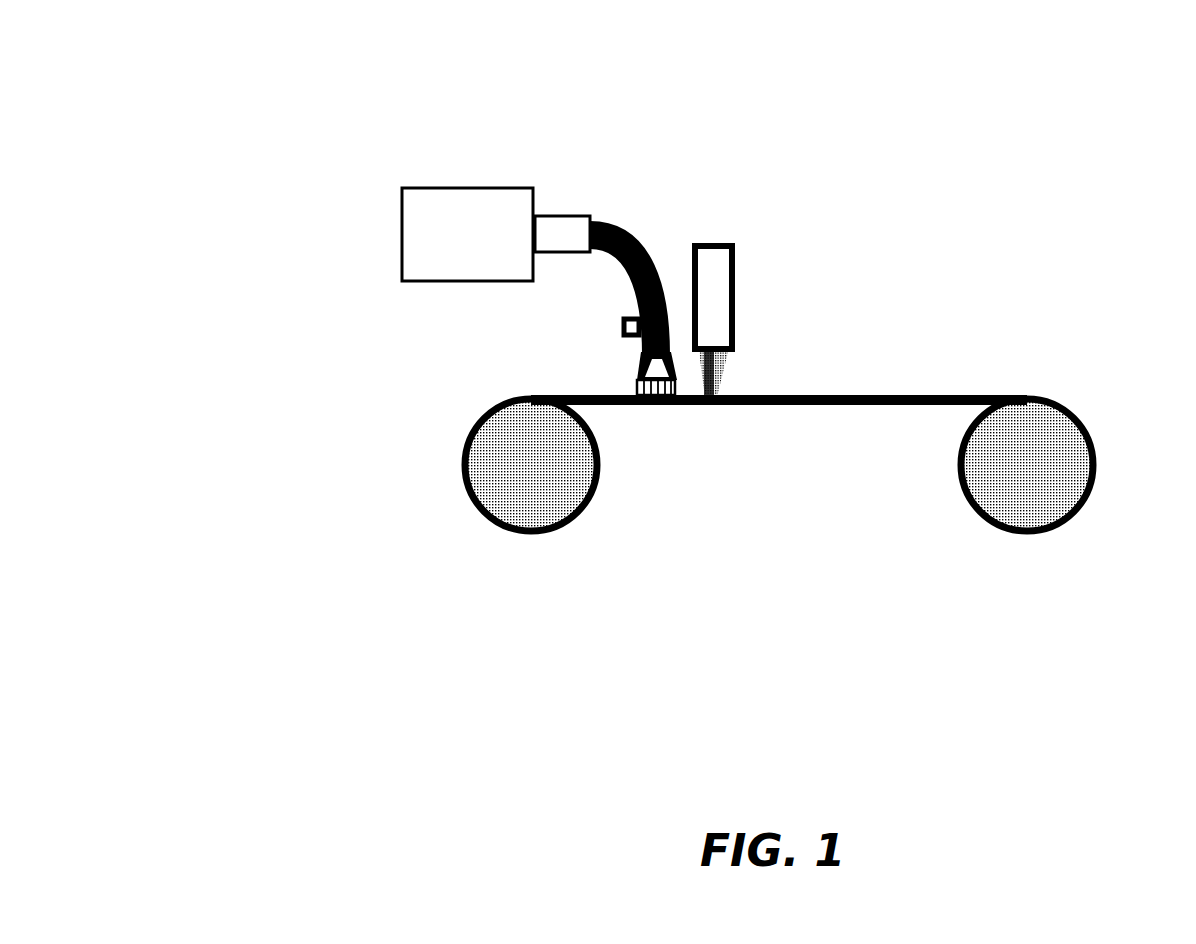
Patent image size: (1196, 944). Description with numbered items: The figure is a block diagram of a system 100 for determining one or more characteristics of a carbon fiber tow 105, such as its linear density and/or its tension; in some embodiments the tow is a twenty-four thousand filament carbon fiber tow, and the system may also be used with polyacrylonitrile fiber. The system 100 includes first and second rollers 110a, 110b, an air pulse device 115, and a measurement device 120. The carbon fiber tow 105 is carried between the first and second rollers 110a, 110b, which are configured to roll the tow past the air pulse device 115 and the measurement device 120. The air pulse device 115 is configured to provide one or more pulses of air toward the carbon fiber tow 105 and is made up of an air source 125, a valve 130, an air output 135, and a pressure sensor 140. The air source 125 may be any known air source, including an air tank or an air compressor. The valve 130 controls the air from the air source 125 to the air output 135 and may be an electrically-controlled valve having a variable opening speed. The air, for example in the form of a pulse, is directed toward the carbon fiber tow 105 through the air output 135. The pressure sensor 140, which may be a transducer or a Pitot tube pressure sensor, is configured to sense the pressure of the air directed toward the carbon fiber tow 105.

The system 100 is at (316, 108).
The carbon fiber tow 105 is at (907, 383).
The first roller 110a is at (480, 520).
The second roller 110b is at (1073, 520).
The air pulse device 115 is at (617, 200).
The measurement device 120 is at (759, 289).
The air source 125 is at (467, 234).
The valve 130 is at (541, 215).
The air output 135 is at (618, 378).
The pressure sensor 140 is at (622, 322).